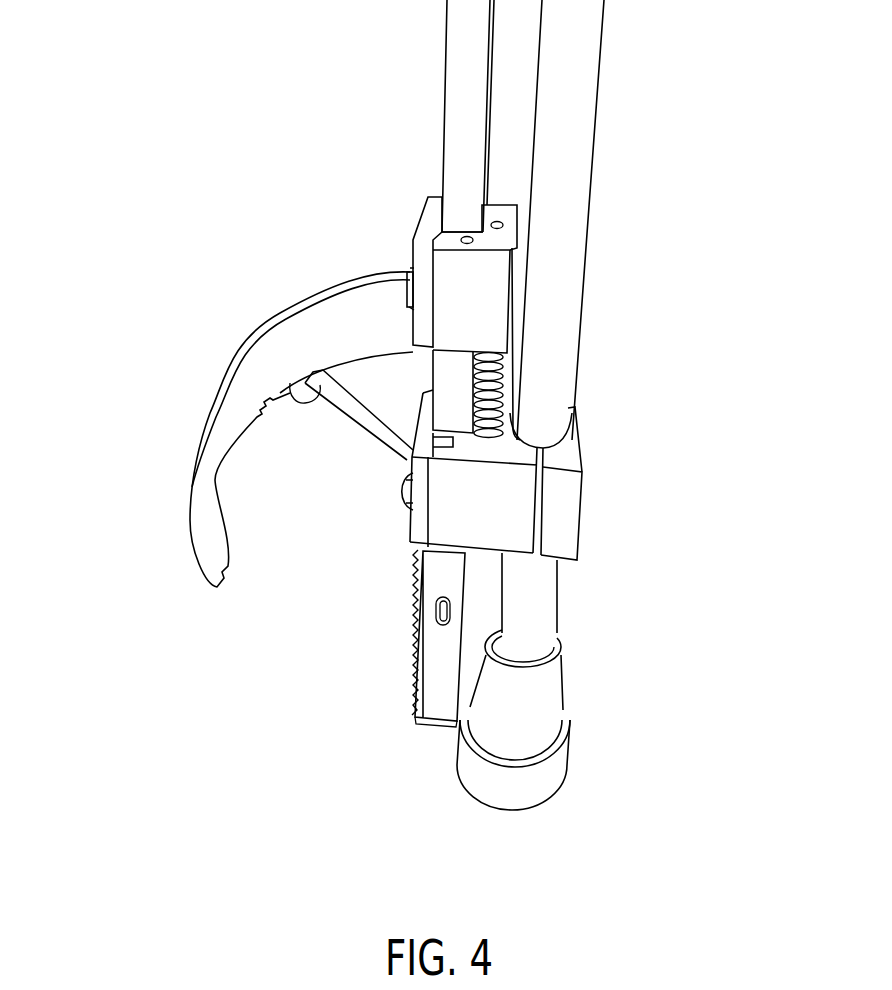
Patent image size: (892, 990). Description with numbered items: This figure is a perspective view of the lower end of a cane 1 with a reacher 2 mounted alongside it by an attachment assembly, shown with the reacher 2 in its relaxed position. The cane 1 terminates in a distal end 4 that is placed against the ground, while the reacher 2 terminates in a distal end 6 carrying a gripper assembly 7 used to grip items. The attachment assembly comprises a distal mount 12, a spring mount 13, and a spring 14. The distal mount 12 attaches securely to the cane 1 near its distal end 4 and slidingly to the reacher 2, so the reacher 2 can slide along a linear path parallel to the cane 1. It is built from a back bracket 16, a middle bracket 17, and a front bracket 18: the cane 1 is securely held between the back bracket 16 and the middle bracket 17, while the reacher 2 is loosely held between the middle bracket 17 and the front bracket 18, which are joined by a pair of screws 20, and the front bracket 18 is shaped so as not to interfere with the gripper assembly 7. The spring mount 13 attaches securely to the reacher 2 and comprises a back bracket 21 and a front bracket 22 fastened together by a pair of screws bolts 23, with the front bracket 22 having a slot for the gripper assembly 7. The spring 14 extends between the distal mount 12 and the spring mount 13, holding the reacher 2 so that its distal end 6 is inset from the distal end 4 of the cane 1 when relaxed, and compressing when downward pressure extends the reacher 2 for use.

The cane 1 is at (572, 170).
The reacher 2 is at (455, 57).
The distal end 4 is at (533, 773).
The distal end 6 is at (437, 717).
The gripper assembly 7 is at (197, 485).
The distal mount 12 is at (620, 542).
The spring mount 13 is at (530, 340).
The spring 14 is at (500, 413).
The back bracket 16 is at (562, 547).
The middle bracket 17 is at (460, 535).
The front bracket 18 is at (417, 527).
The screws 20 is at (403, 495).
The back bracket 21 is at (497, 300).
The front bracket 22 is at (410, 270).
The screws bolts 23 is at (405, 279).